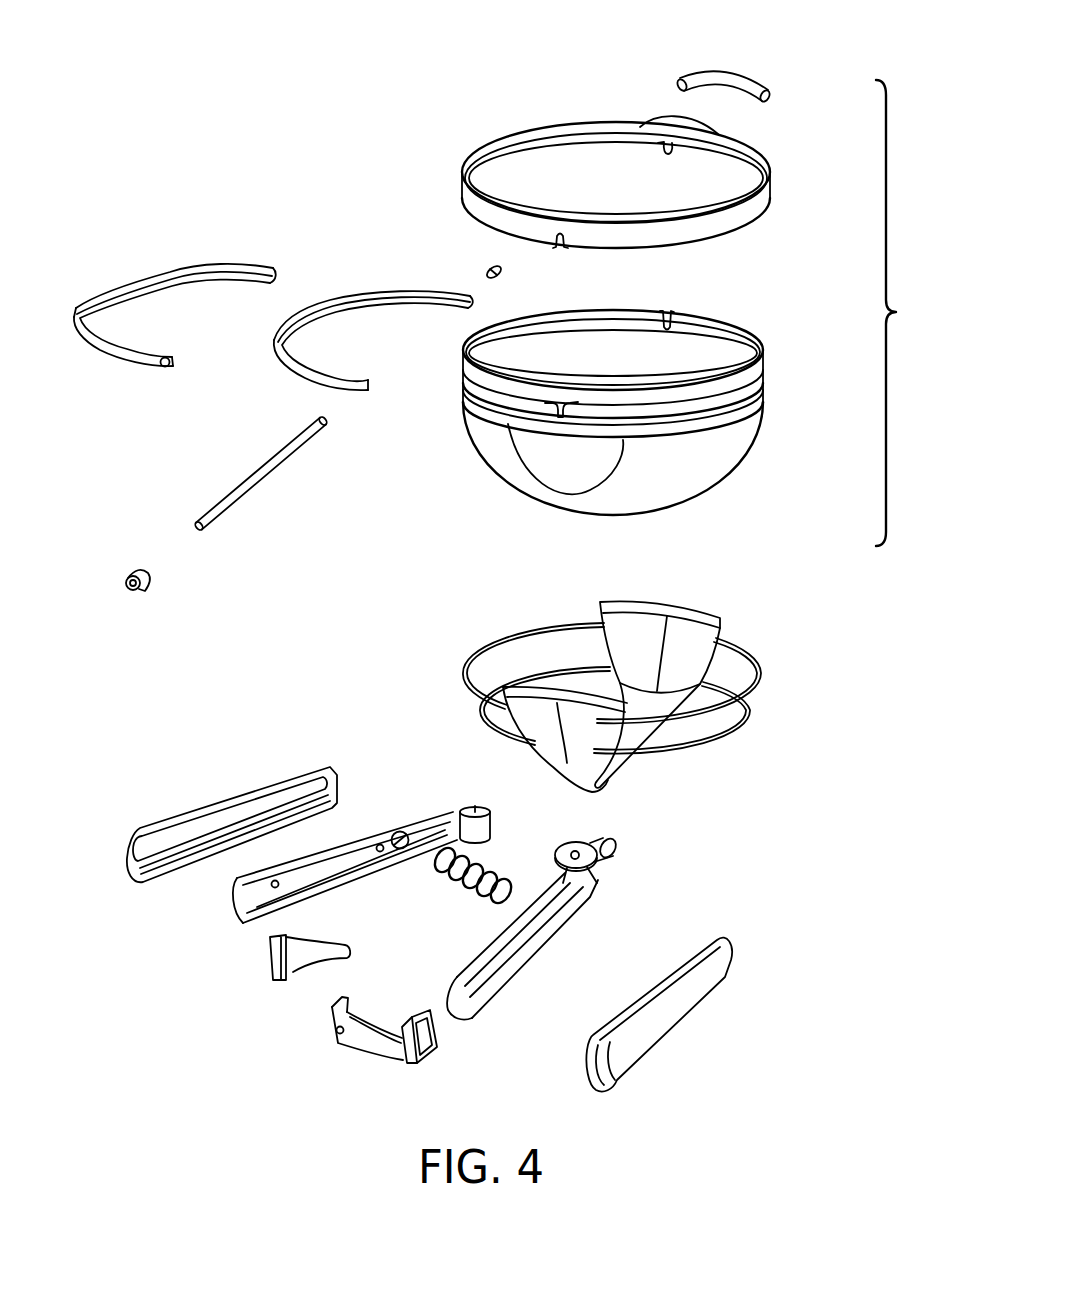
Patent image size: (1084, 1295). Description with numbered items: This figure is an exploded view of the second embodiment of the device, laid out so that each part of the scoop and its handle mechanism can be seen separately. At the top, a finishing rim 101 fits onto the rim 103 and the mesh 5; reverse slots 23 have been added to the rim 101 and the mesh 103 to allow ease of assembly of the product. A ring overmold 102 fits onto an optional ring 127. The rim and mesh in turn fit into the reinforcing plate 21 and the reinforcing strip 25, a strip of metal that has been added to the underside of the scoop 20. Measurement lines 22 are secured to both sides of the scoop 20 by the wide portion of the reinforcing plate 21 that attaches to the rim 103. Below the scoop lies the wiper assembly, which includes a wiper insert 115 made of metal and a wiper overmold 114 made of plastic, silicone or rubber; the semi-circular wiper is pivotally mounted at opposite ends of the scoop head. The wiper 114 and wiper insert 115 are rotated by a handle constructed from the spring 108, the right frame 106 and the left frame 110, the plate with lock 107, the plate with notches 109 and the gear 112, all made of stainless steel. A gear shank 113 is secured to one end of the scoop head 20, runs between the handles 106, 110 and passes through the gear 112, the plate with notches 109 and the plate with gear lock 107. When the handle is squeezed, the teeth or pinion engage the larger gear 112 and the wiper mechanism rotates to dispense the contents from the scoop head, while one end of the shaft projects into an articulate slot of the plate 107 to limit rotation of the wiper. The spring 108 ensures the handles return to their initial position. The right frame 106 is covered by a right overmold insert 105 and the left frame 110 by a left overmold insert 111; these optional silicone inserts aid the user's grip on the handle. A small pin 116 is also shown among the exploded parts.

The mesh 5 is at (718, 504).
The scoop 20 is at (907, 313).
The reinforcing plate 21 is at (543, 745).
The measurement lines 22 is at (722, 743).
The reverse slots 23 is at (666, 155).
The reinforcing strip 25 is at (620, 772).
The finishing rim 101 is at (563, 122).
The ring overmold 102 is at (708, 72).
The rim 103 is at (780, 345).
The right overmold insert 105 is at (648, 1040).
The right frame 106 is at (479, 998).
The plate with lock 107 is at (440, 1093).
The spring 108 is at (471, 894).
The plate with notches 109 is at (280, 950).
The left frame 110 is at (236, 908).
The left overmold insert 111 is at (130, 877).
The gear 112 is at (127, 578).
The gear shank 113 is at (253, 473).
The wiper overmold 114 is at (130, 274).
The wiper insert 115 is at (373, 291).
The pin 116 is at (487, 272).
The ring 127 is at (712, 128).